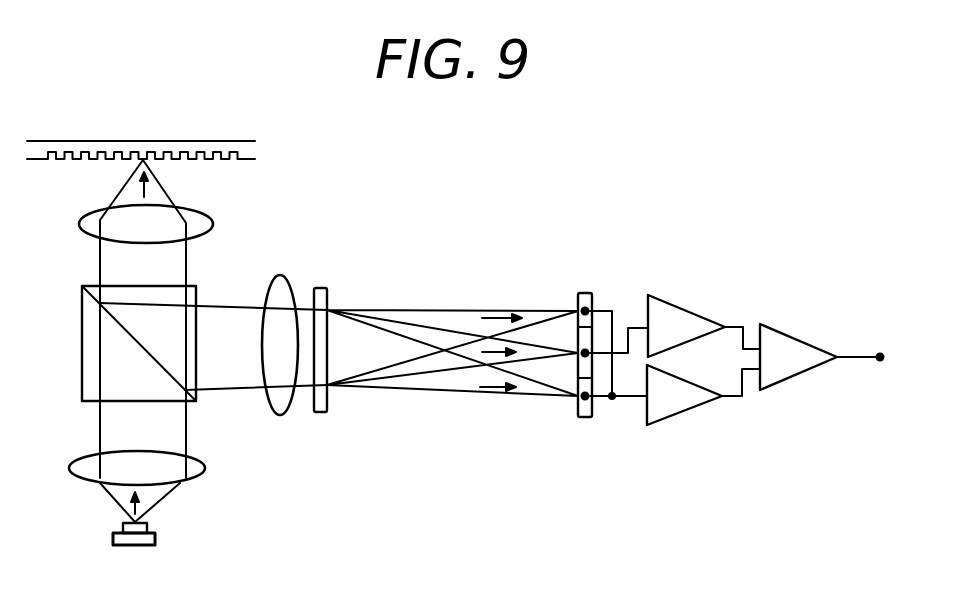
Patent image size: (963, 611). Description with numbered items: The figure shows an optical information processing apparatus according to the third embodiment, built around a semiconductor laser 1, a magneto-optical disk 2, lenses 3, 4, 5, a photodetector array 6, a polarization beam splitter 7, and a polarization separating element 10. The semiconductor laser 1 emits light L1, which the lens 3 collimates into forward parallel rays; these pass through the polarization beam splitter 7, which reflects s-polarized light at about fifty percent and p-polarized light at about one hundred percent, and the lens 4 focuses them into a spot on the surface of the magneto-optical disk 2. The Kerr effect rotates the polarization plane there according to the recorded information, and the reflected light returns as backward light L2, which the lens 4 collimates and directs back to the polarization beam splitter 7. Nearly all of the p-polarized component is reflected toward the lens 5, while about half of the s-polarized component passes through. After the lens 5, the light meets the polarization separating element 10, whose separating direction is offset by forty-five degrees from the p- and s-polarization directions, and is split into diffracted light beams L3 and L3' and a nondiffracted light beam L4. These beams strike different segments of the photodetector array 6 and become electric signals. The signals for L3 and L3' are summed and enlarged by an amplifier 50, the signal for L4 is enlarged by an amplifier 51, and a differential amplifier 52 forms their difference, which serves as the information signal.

The semiconductor laser 1 is at (160, 538).
The magneto-optical disk 2 is at (258, 157).
The lens 3 is at (80, 472).
The lens 4 is at (80, 222).
The lens 5 is at (281, 283).
The photodetector array 6 is at (587, 293).
The polarization beam splitter 7 is at (83, 325).
The polarization separating element 10 is at (320, 288).
The amplifier 50 is at (676, 405).
The amplifier 51 is at (670, 312).
The differential amplifier 52 is at (784, 338).
The light L1 is at (140, 503).
The backward light L2 is at (150, 186).
The diffracted light beam L3 is at (495, 429).
The diffracted light beam L3' is at (481, 279).
The nondiffracted light beam L4 is at (475, 362).